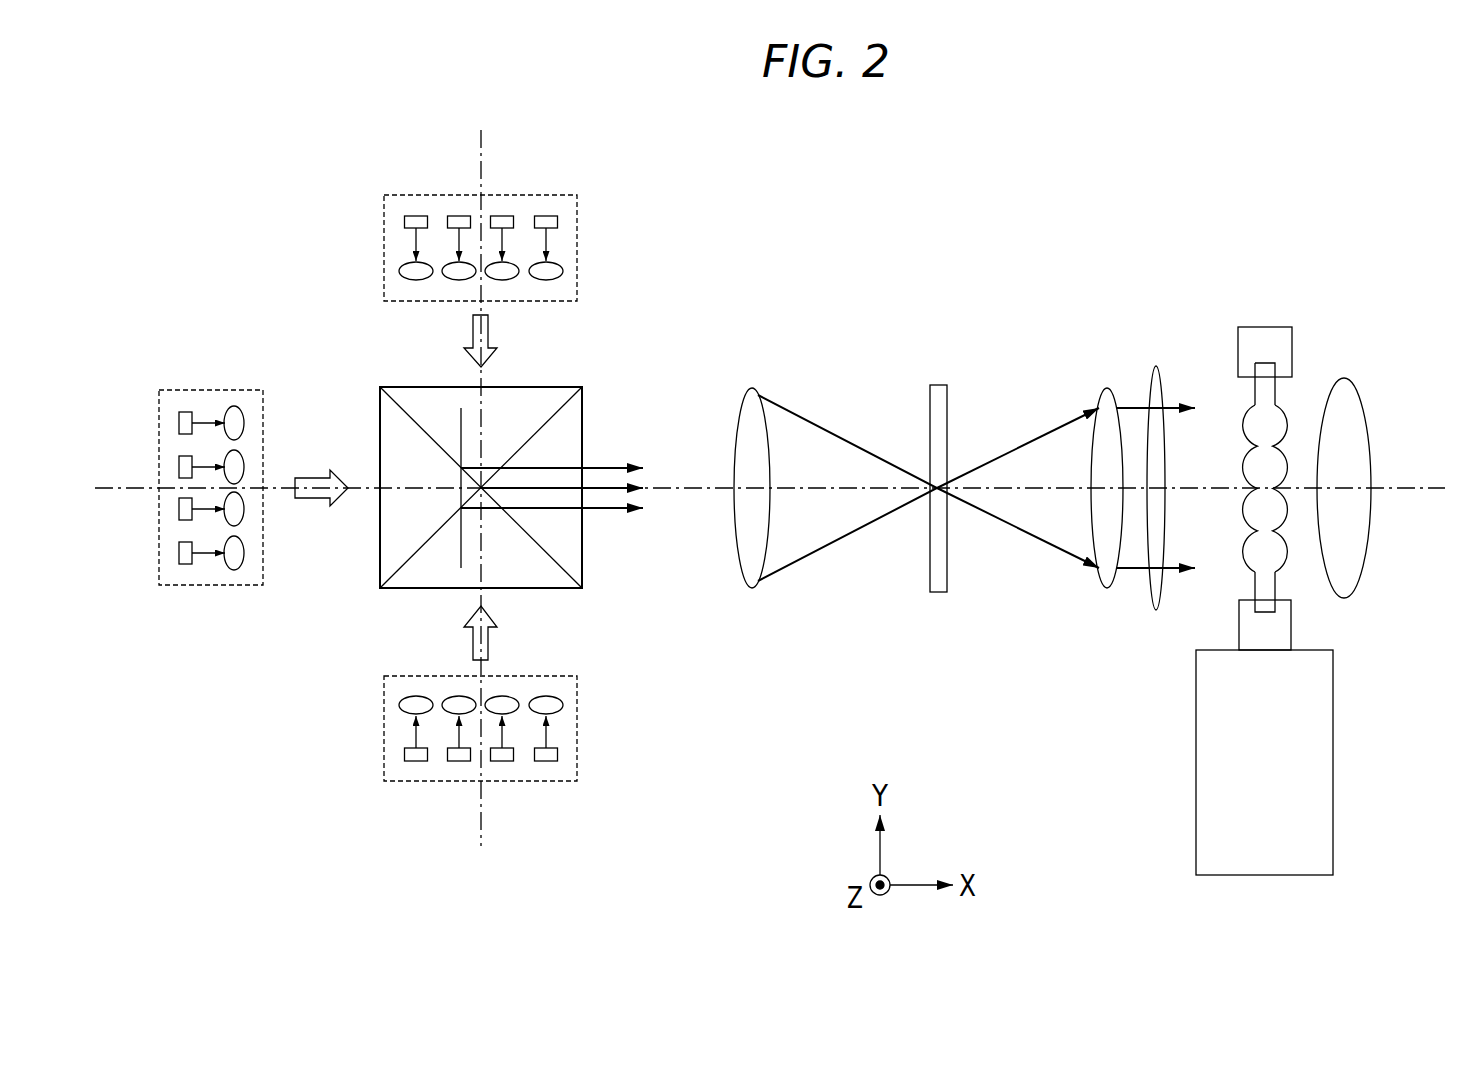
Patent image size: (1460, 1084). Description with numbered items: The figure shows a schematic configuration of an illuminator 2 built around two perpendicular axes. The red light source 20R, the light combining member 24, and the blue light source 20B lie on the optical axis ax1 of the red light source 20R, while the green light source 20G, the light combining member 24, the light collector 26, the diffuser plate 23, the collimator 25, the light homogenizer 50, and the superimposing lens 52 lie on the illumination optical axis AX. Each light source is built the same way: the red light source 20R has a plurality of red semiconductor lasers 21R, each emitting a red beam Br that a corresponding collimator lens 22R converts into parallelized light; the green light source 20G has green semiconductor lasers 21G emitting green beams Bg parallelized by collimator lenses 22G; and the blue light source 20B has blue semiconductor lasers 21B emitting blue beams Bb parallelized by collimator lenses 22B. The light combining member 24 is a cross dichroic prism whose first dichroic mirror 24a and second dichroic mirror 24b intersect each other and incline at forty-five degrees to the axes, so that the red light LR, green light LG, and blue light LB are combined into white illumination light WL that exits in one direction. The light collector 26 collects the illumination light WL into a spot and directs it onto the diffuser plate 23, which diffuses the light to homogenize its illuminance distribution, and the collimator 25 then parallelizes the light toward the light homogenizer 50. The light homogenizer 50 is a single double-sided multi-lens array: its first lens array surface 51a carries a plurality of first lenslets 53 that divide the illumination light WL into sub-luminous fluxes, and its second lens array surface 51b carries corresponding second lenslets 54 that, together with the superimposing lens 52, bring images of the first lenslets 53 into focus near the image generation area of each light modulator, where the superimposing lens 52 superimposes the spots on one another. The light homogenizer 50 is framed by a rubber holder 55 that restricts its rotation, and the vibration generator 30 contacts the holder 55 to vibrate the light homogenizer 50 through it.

The illuminator 2 is at (1309, 166).
The blue light source 20B is at (452, 239).
The blue semiconductor laser 21B is at (558, 222).
The collimator lens 22B is at (556, 276).
The blue beam Bb is at (548, 240).
The green light source 20G is at (193, 496).
The green semiconductor laser 21G is at (169, 408).
The collimator lens 22G is at (241, 412).
The green beam Bg is at (200, 423).
The red light source 20R is at (454, 737).
The red semiconductor laser 21R is at (560, 758).
The collimator lens 22R is at (558, 697).
The red beam Br is at (548, 738).
The diffuser plate 23 is at (938, 390).
The light combining member 24 is at (447, 465).
The first dichroic mirror 24a is at (418, 420).
The second dichroic mirror 24b is at (383, 580).
The collimator 25 is at (1103, 405).
The light collector 26 is at (745, 400).
The vibration generator 30 is at (1258, 878).
The light homogenizer 50 is at (1310, 457).
The first lens array surface 51a is at (1242, 553).
The second lens array surface 51b is at (1291, 552).
The superimposing lens 52 is at (1343, 380).
The first lenslet 53 is at (1250, 507).
The second lenslet 54 is at (1278, 427).
The holder 55 is at (1265, 325).
The illumination optical axis AX is at (118, 483).
The optical axis ax1 is at (484, 140).
The blue light LB is at (470, 330).
The green light LG is at (312, 476).
The red light LR is at (470, 642).
The white illumination light WL is at (1163, 320).